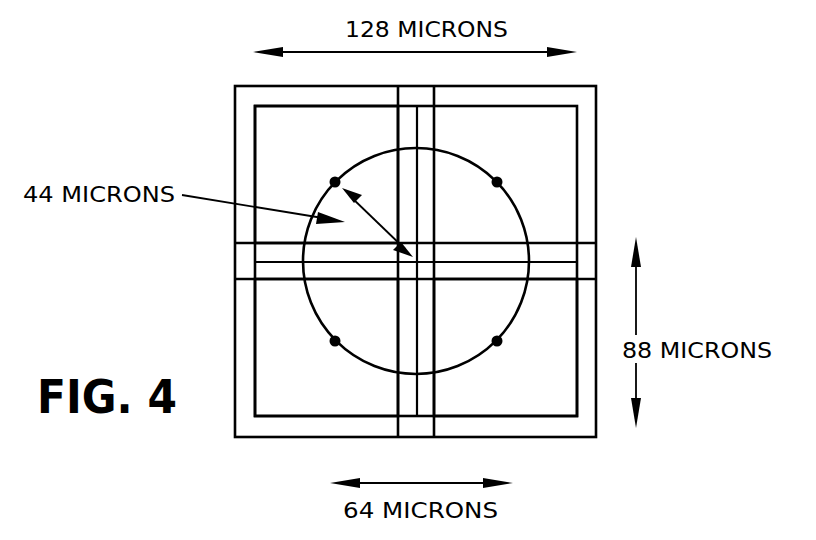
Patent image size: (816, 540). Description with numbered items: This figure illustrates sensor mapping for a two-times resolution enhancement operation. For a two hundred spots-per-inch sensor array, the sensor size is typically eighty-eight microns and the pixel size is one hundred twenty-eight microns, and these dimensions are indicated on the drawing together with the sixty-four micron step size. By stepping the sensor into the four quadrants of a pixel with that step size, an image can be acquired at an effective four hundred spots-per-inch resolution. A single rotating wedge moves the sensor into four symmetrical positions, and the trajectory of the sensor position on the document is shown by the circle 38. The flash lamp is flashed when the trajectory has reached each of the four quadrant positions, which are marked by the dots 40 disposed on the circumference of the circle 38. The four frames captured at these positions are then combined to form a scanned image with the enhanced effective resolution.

The circle 38 is at (532, 227).
The dots 40 is at (501, 180).